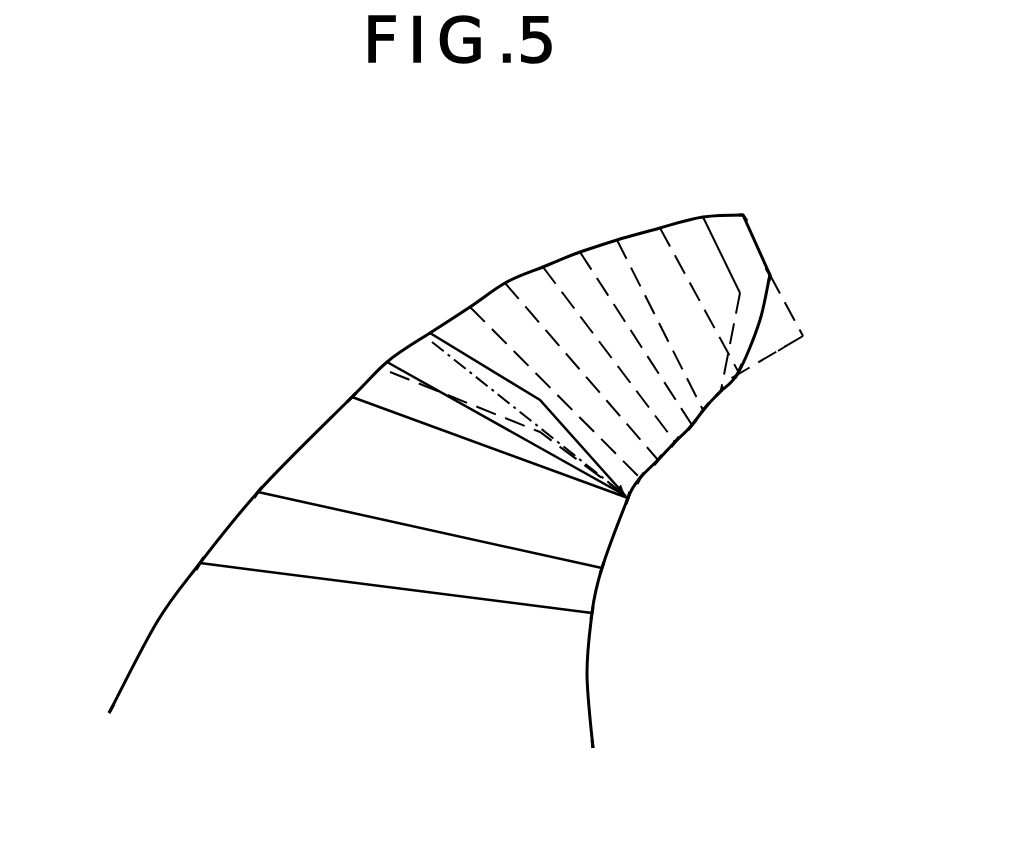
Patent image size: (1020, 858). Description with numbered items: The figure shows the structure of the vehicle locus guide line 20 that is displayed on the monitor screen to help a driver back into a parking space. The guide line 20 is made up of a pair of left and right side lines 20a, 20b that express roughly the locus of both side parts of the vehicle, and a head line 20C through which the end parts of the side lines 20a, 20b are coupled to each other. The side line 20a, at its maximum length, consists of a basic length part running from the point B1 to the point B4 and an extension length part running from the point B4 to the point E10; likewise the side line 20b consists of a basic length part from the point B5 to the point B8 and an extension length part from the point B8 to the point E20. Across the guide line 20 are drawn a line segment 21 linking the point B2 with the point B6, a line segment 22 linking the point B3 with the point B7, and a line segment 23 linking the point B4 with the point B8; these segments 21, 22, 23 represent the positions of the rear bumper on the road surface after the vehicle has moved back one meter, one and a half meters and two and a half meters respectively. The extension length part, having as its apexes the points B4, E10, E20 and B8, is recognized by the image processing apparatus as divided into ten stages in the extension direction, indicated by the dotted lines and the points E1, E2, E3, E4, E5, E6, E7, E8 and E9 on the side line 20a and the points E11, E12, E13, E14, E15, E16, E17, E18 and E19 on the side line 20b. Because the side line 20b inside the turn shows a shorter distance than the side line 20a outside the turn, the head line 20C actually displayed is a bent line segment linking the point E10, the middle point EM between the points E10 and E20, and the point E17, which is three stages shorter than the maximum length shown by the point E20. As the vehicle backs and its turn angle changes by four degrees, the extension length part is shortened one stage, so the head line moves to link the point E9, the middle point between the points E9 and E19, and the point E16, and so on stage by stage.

The vehicle locus guide line 20 is at (476, 449).
The side line 20a is at (153, 619).
The side line 20b is at (598, 702).
The head line 20C is at (760, 235).
The line segment 21 is at (302, 586).
The line segment 22 is at (353, 513).
The line segment 23 is at (475, 444).
The point B1 is at (107, 710).
The point B2 is at (200, 563).
The point B3 is at (258, 492).
The point B4 is at (352, 397).
The point B5 is at (593, 748).
The point B6 is at (592, 613).
The point B7 is at (602, 568).
The point B8 is at (631, 502).
The point E1 is at (388, 360).
The point E2 is at (430, 333).
The point E3 is at (470, 307).
The point E4 is at (505, 283).
The point E5 is at (543, 267).
The point E6 is at (580, 252).
The point E7 is at (617, 240).
The point E8 is at (660, 228).
The point E9 is at (703, 217).
The point E10 is at (743, 215).
The point E11 is at (633, 500).
The point E12 is at (640, 478).
The point E13 is at (658, 460).
The point E14 is at (675, 442).
The point E15 is at (692, 425).
The point E16 is at (705, 408).
The point E17 is at (720, 390).
The point E18 is at (740, 375).
The point E19 is at (781, 349).
The point E20 is at (803, 336).
The middle point EM is at (770, 275).